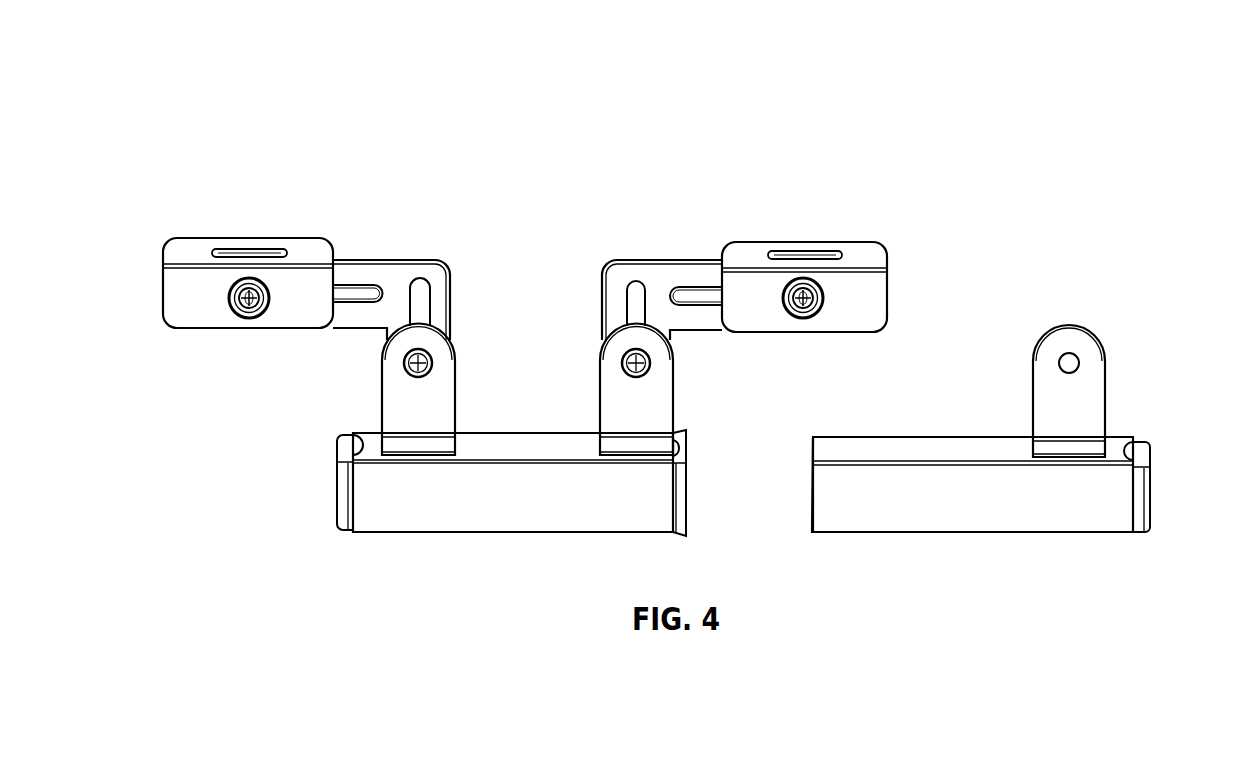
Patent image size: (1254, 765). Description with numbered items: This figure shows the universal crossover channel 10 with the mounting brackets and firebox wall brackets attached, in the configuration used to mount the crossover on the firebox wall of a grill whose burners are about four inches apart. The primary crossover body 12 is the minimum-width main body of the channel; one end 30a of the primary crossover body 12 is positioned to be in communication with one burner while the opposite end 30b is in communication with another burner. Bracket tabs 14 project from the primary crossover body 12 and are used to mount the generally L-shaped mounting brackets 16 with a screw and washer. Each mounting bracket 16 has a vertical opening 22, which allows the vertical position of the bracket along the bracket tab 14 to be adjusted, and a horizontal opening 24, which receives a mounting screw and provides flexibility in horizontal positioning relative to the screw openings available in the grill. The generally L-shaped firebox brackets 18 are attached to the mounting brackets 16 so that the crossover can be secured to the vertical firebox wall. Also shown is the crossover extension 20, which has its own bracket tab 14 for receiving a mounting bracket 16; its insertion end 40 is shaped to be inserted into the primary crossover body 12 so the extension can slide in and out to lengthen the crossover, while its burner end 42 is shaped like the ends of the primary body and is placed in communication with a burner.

The universal crossover channel 10 is at (1007, 101).
The primary crossover body 12 is at (478, 508).
The bracket tab 14 is at (405, 418).
The mounting bracket 16 is at (392, 272).
The firebox bracket 18 is at (188, 248).
The crossover extension 20 is at (950, 508).
The vertical opening 22 is at (428, 306).
The horizontal opening 24 is at (362, 296).
The end of primary crossover body 30a is at (340, 492).
The opposite end of primary crossover body 30b is at (687, 500).
The insertion end 40 is at (812, 480).
The burner end 42 is at (1148, 490).